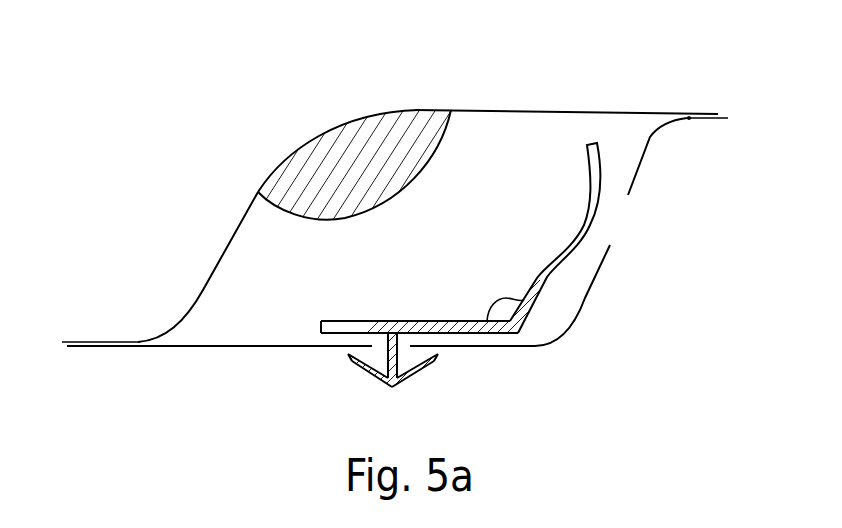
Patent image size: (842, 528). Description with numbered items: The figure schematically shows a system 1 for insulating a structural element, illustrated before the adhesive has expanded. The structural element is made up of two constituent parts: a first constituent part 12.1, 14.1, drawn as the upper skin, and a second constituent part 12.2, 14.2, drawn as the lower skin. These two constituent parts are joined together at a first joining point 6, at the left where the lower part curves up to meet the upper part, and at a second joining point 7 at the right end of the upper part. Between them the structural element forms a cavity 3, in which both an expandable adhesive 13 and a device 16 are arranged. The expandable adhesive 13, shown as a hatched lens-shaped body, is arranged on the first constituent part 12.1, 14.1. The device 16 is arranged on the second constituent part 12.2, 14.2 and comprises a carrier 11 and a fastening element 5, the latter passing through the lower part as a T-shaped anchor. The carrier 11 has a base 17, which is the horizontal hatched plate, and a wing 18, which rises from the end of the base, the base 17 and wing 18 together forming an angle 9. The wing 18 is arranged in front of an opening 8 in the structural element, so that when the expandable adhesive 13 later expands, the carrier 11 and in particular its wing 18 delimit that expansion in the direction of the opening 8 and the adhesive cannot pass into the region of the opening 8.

The system 1 is at (250, 114).
The cavity 3 is at (306, 276).
The fastening element 5 is at (398, 387).
The first joining point 6 is at (137, 342).
The second joining point 7 is at (689, 120).
The opening 8 is at (621, 210).
The angle 9 is at (505, 307).
The carrier 11 is at (470, 334).
The expandable adhesive 13 is at (378, 120).
The device 16 is at (556, 292).
The base 17 is at (444, 324).
The wing 18 is at (584, 200).
The first constituent part of the structural element 12.1 is at (571, 69).
The first constituent part of the structural element 14.1 is at (568, 110).
The second constituent part of the structural element 12.2 is at (336, 334).
The second constituent part of the structural element 14.2 is at (202, 348).